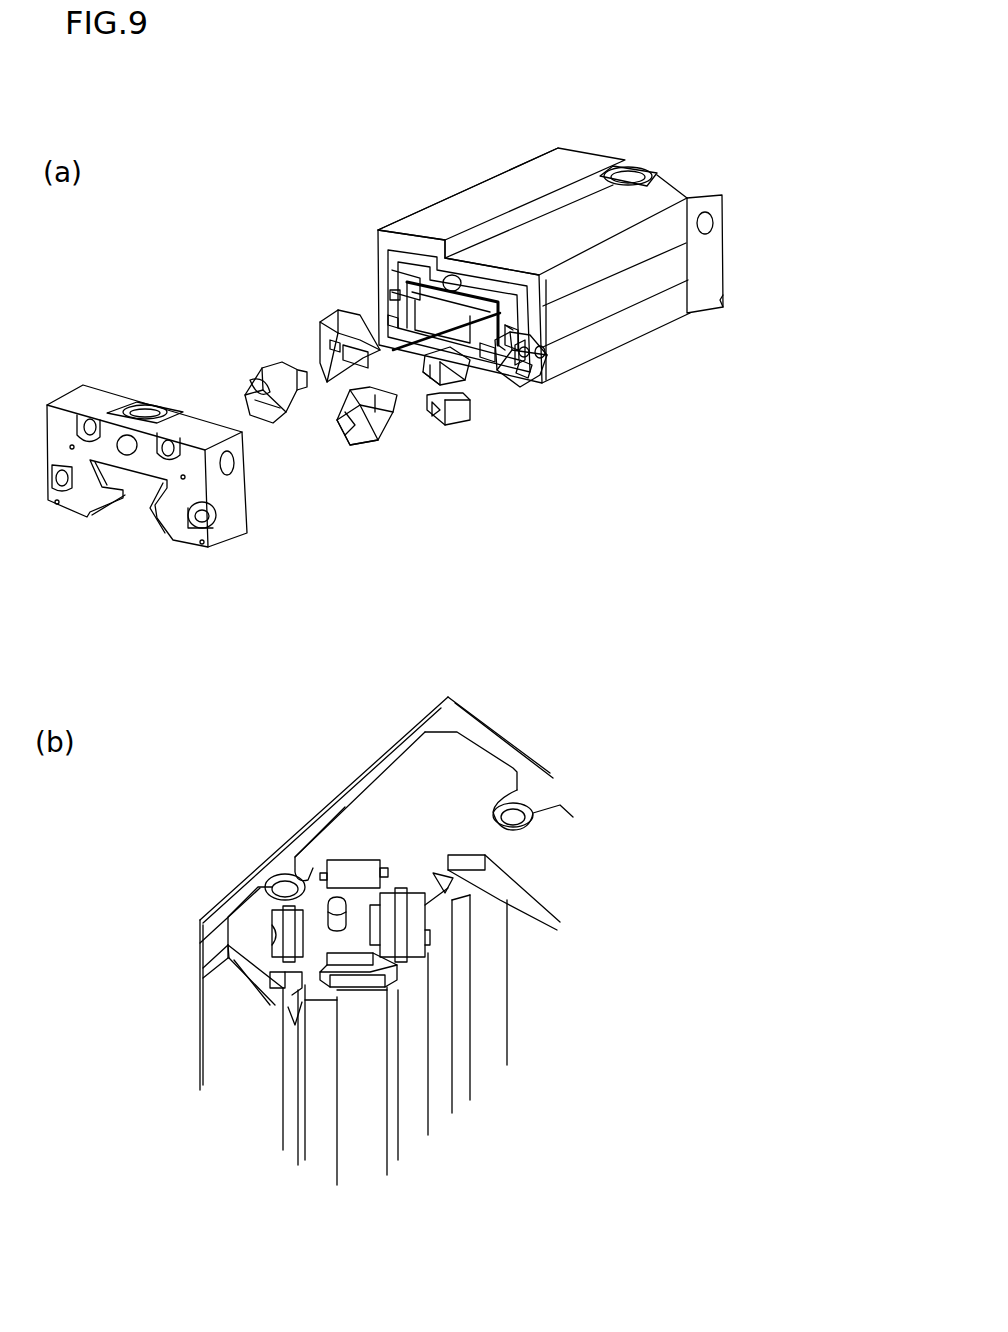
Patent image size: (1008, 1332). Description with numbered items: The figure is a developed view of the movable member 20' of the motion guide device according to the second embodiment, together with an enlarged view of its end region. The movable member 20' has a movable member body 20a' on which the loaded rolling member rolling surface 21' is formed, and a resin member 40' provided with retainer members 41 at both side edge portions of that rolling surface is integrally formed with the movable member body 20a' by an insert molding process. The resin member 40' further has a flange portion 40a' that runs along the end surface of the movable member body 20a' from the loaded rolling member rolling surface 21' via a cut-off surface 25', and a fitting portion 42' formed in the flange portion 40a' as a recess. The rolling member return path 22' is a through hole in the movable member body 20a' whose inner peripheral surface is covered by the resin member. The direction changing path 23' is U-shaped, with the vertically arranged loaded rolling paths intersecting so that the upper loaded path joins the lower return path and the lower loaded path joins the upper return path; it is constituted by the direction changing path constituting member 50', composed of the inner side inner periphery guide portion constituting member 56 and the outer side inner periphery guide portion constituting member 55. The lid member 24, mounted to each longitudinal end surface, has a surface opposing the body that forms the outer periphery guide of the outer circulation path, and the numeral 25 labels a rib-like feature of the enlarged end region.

The movable member 20' is at (548, 219).
The movable member body 20a' is at (386, 521).
The flange portion 40a' is at (268, 563).
The cut-off surface 25' is at (359, 305).
The lid member 24 is at (708, 270).
The resin member 40' is at (439, 622).
The rolling member return path 22' is at (410, 651).
The fitting portion 42' is at (394, 647).
The loaded rolling member rolling surface 21' is at (385, 746).
The direction changing path 23' is at (339, 443).
The outer side inner periphery guide portion constituting member 55 is at (370, 443).
The inner side inner periphery guide portion constituting member 56 is at (452, 418).
The direction changing path constituting member 50' is at (427, 542).
The rib 25 is at (222, 1008).
The retainer member 41 is at (423, 903).